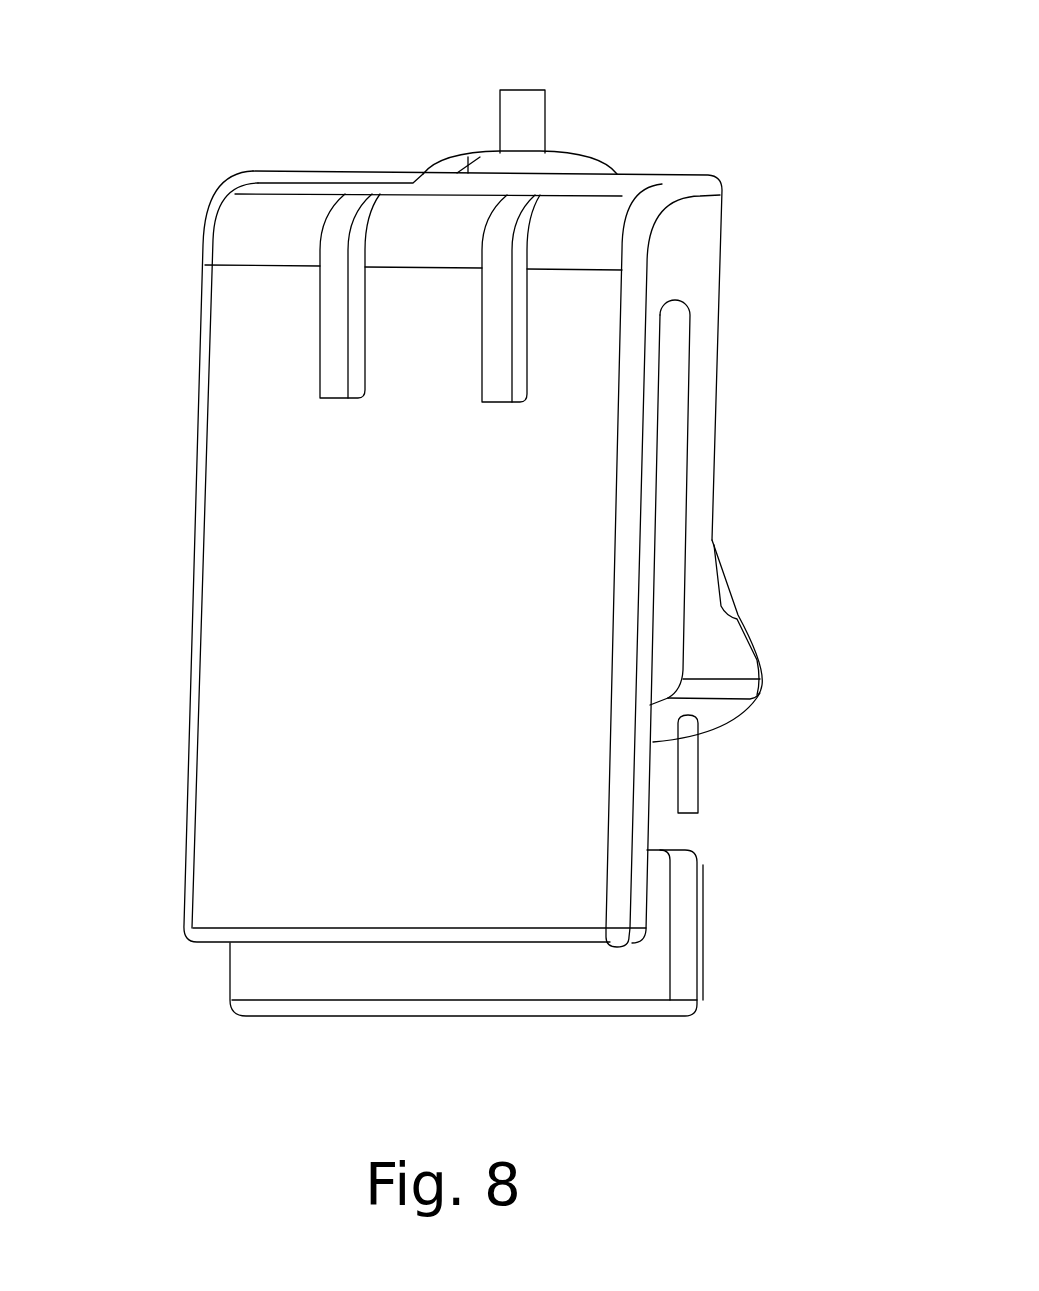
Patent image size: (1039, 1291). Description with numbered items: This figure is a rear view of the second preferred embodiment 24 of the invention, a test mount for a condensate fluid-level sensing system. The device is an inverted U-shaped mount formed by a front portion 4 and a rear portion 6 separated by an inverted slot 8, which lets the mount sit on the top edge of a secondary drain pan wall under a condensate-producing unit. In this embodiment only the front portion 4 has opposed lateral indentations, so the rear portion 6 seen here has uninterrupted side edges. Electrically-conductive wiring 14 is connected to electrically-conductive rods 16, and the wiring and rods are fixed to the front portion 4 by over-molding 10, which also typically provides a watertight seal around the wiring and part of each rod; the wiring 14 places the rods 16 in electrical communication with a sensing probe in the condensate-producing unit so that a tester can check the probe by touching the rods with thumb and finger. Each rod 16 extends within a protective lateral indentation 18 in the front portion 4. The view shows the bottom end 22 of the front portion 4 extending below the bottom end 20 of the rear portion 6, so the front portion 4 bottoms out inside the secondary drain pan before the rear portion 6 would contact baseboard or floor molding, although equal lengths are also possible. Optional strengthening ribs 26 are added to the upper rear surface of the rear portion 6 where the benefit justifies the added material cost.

The second preferred embodiment 24 is at (160, 62).
The front portion 4 is at (700, 277).
The rear portion 6 is at (228, 515).
The inverted slot 8 is at (675, 458).
The over-molding 10 is at (582, 160).
The electrically-conductive wiring 14 is at (507, 132).
The electrically-conductive rods 16 is at (692, 767).
The protective lateral indentation 18 is at (672, 823).
The bottom end of the rear portion 20 is at (227, 913).
The bottom end of the front portion 22 is at (262, 985).
The strengthening ribs 26 is at (500, 330).